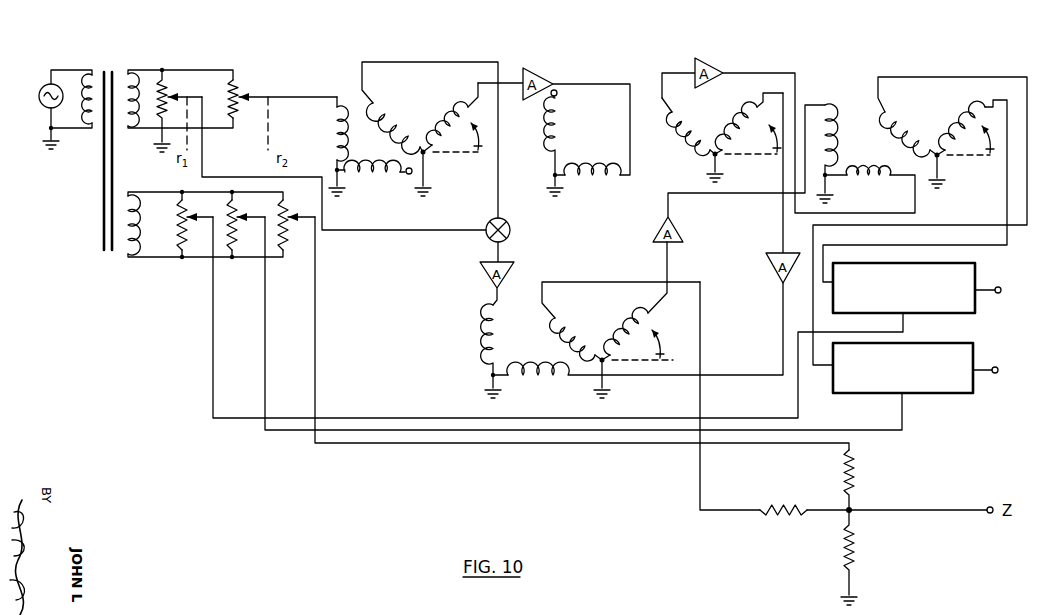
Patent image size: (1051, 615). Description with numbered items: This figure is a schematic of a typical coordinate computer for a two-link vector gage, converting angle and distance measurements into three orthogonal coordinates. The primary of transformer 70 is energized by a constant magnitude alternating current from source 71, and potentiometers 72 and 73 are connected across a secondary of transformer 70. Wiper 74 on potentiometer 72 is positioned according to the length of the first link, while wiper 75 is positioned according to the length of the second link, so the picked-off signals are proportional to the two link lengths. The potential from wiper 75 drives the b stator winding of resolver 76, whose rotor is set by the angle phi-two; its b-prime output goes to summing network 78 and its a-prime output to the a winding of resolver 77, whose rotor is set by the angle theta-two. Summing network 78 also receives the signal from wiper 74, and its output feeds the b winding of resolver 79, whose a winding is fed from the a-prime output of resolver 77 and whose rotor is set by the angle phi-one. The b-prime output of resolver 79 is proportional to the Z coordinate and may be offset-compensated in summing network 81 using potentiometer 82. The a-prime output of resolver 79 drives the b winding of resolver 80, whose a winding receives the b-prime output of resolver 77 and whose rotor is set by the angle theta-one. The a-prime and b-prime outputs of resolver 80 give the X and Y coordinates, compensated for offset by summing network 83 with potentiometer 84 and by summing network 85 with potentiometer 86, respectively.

The transformer 70 is at (116, 74).
The source 71 is at (40, 102).
The potentiometer 72 is at (166, 78).
The potentiometer 73 is at (240, 80).
The wiper 74 is at (182, 97).
The wiper 75 is at (266, 96).
The resolver 76 is at (427, 154).
The resolver 77 is at (703, 143).
The summing network 78 is at (511, 231).
The resolver 79 is at (511, 379).
The resolver 80 is at (942, 157).
The summing network 81 is at (853, 512).
The potentiometer 82 is at (296, 232).
The summing network 83 is at (970, 306).
The potentiometer 84 is at (193, 232).
The summing network 85 is at (970, 394).
The potentiometer 86 is at (243, 232).